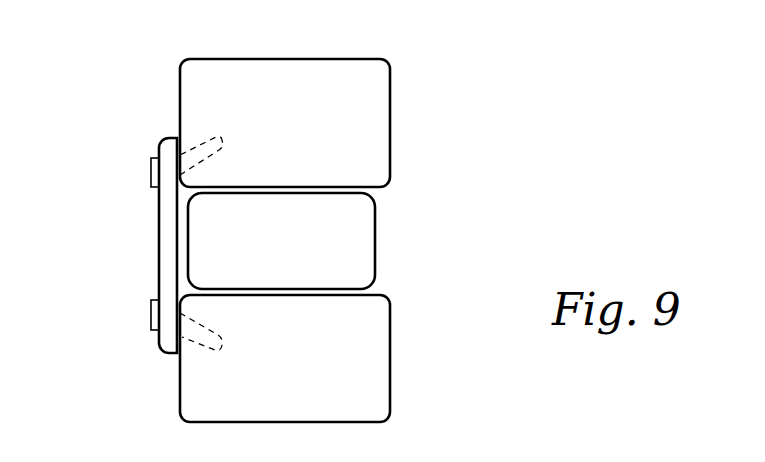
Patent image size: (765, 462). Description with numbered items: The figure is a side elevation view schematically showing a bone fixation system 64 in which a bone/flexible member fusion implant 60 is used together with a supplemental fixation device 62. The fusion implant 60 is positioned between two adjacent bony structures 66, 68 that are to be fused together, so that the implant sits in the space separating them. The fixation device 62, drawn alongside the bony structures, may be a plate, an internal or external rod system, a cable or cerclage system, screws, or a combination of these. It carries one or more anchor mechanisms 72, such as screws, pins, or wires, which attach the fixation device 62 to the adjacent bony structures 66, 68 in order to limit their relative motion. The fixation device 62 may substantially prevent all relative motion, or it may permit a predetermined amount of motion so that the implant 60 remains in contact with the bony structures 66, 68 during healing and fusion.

The bone fixation system 64 is at (115, 82).
The fixation device 62 is at (159, 255).
The anchor mechanism 72 is at (150, 173).
The bony structure 66 is at (370, 117).
The bone/flexible member fusion implant 60 is at (359, 250).
The bony structure 68 is at (372, 368).